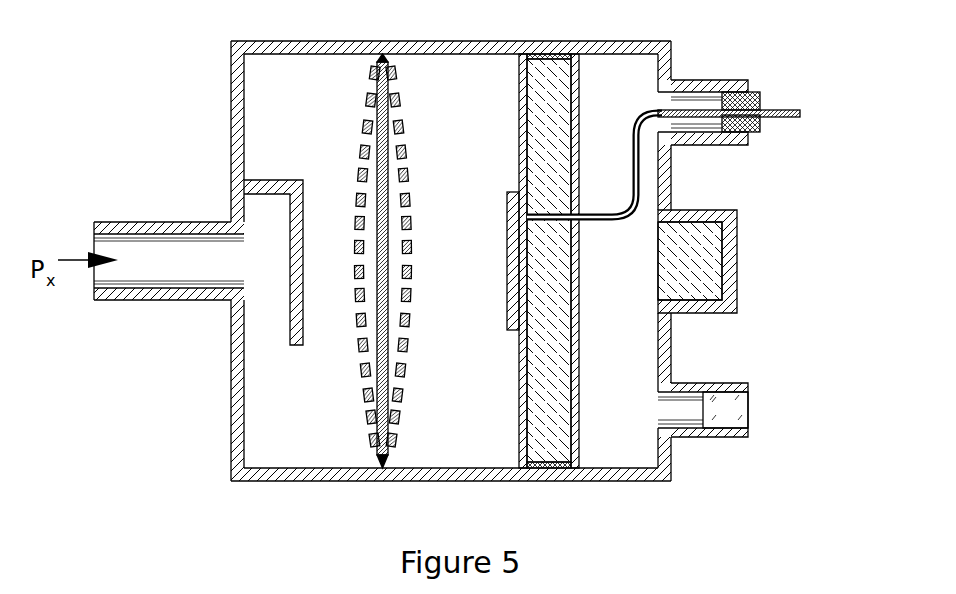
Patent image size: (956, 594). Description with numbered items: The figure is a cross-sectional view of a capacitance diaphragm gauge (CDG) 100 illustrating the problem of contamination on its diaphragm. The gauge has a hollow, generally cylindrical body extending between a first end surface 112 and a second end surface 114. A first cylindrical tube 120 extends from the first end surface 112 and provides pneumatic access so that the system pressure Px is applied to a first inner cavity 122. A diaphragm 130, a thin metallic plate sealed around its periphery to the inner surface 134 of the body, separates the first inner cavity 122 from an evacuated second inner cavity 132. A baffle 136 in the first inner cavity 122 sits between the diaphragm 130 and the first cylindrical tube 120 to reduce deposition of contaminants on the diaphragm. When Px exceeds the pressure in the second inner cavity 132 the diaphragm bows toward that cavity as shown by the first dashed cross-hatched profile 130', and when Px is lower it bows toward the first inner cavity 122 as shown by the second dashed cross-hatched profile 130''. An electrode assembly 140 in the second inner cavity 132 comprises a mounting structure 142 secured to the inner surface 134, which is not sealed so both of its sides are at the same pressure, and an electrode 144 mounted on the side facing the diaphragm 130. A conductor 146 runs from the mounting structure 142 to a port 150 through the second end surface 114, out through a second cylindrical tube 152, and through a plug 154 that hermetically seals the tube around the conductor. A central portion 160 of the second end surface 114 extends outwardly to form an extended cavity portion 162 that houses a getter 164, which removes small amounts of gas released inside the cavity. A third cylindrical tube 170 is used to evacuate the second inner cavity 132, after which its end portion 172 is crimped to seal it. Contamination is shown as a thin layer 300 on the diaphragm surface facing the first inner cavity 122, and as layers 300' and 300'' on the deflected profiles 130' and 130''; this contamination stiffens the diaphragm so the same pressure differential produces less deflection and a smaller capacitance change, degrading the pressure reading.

The capacitance diaphragm gauge 100 is at (411, 280).
The first end surface 112 is at (231, 130).
The second end surface 114 is at (672, 372).
The first cylindrical tube 120 is at (163, 222).
The first inner cavity 122 is at (272, 436).
The diaphragm 130 is at (355, 261).
The first dashed cross-hatched profile 130' is at (368, 256).
The second dashed cross-hatched profile 130'' is at (342, 256).
The second inner cavity 132 is at (627, 436).
The inner surface 134 is at (268, 54).
The baffle 136 is at (288, 325).
The electrode assembly 140 is at (504, 261).
The mounting structure 142 is at (517, 437).
The electrode 144 is at (507, 295).
The conductor 146 is at (652, 110).
The port 150 is at (734, 78).
The second cylindrical tube 152 is at (720, 80).
The plug 154 is at (752, 92).
The central portion 160 is at (691, 261).
The extended cavity portion 162 is at (652, 248).
The getter 164 is at (663, 290).
The third cylindrical tube 170 is at (722, 409).
The end portion 172 is at (722, 418).
The thin layer 300 is at (368, 261).
The layer 300' is at (341, 165).
The layer 300'' is at (337, 228).